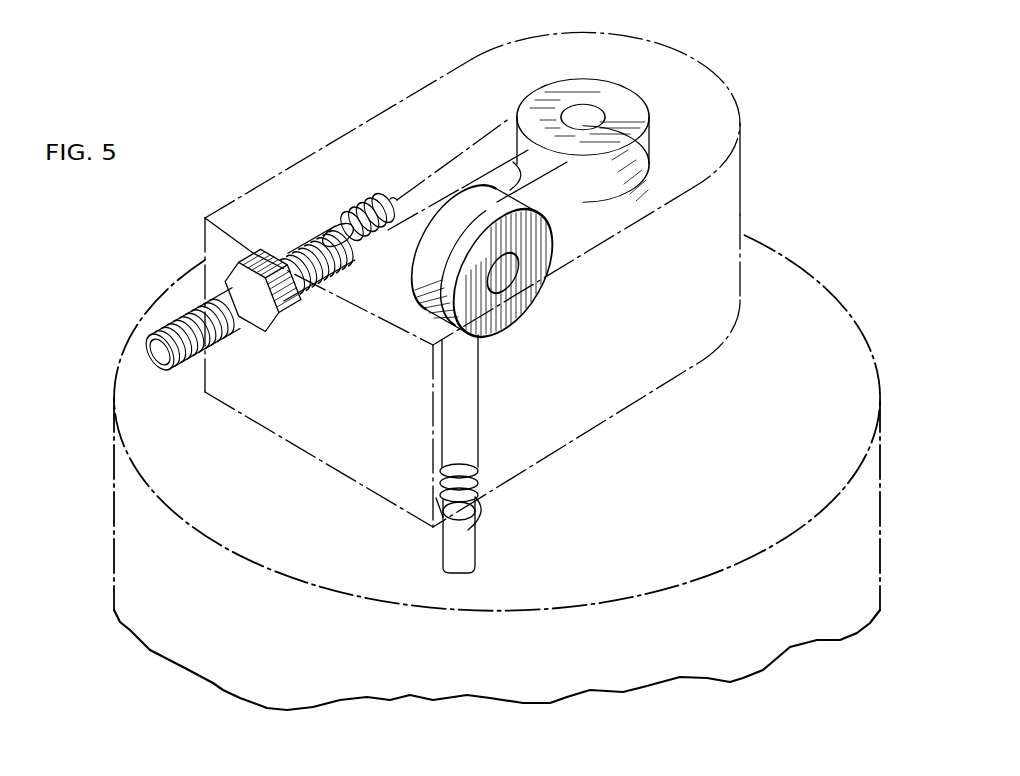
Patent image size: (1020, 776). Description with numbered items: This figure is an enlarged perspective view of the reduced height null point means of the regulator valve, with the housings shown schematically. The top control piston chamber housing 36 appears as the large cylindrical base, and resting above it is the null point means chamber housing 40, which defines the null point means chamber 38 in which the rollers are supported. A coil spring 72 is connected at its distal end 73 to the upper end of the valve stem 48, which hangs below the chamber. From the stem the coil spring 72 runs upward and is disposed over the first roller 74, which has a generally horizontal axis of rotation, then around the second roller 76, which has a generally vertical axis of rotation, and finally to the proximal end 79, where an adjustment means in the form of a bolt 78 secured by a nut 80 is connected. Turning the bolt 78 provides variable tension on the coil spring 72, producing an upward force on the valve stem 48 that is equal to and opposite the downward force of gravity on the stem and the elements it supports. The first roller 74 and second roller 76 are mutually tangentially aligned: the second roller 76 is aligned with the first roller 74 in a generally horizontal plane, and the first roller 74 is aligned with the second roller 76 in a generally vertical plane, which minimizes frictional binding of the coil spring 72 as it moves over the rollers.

The top control piston chamber housing 36 is at (690, 480).
The null point means chamber 38 is at (677, 266).
The null point means chamber housing 40 is at (742, 127).
The valve stem 48 is at (470, 558).
The coil spring 72 is at (477, 142).
The distal end 73 is at (482, 463).
The first roller 74 is at (533, 300).
The second roller 76 is at (617, 96).
The bolt 78 is at (305, 246).
The proximal end 79 is at (368, 207).
The nut 80 is at (250, 256).